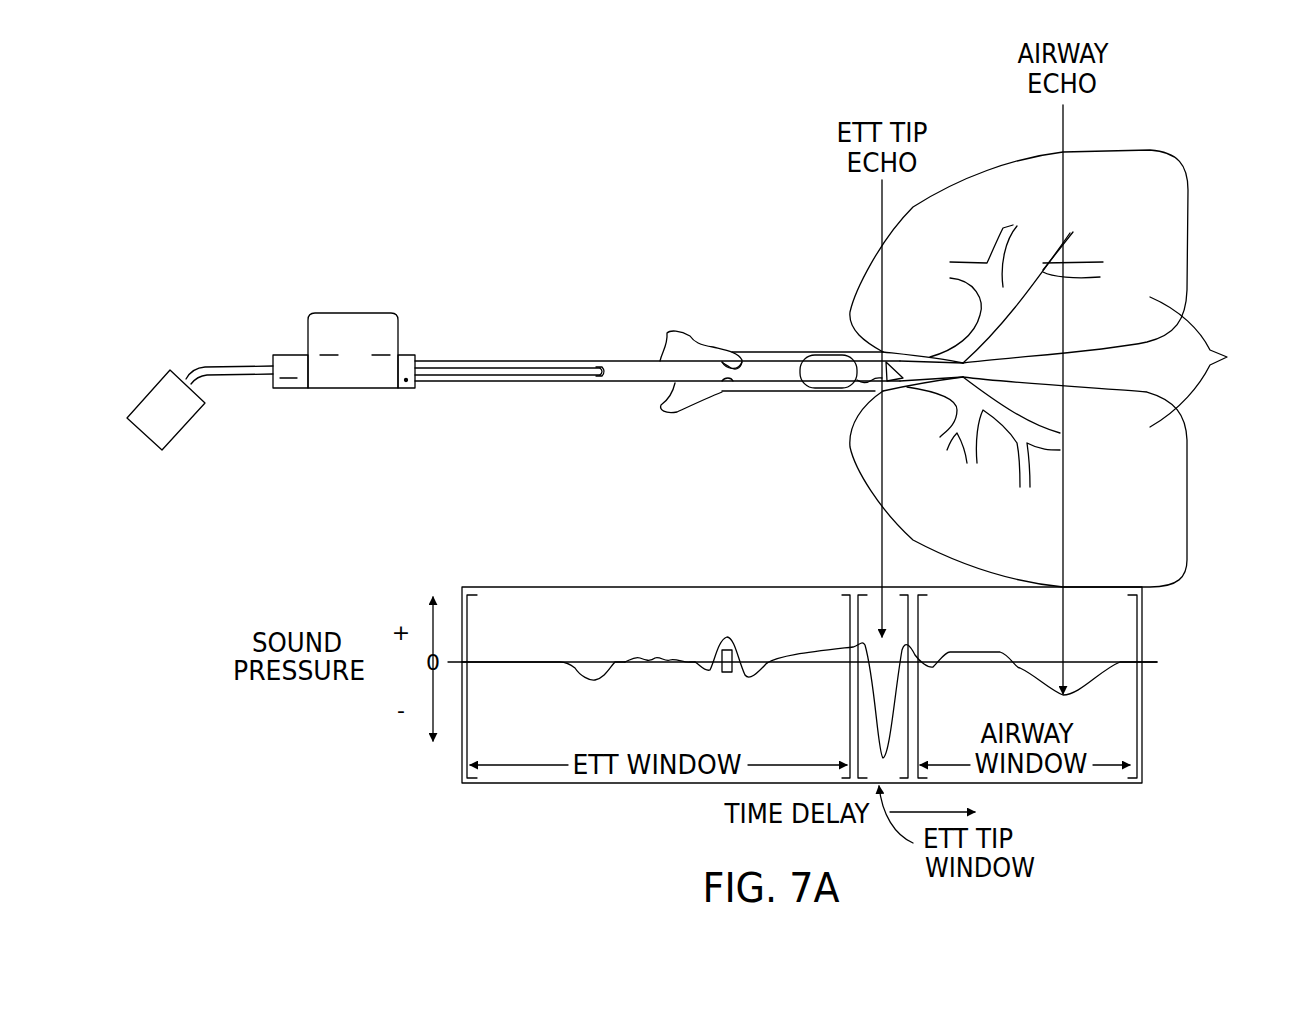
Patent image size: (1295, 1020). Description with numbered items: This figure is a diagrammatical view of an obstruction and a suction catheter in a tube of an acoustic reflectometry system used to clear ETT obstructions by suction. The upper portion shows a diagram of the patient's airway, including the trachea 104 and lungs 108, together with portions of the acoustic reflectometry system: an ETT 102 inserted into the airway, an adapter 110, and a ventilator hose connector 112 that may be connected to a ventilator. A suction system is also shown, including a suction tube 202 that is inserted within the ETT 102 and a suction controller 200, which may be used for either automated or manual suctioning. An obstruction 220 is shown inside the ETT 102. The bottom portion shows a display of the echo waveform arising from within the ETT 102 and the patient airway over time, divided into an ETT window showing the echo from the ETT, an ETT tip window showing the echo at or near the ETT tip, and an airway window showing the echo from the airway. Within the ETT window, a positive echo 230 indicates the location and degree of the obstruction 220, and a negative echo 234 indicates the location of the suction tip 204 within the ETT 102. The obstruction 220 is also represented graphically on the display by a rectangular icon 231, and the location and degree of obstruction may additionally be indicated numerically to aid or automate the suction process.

The ETT 102 is at (638, 361).
The trachea 104 is at (750, 392).
The lungs 108 is at (1064, 368).
The adapter 110 is at (372, 313).
The ventilator hose connector 112 is at (292, 355).
The suction controller 200 is at (183, 428).
The suction tube 202 is at (562, 362).
The suction tip 204 is at (606, 372).
The obstruction 220 is at (745, 362).
The positive echo 230 is at (727, 632).
The rectangular icon 231 is at (727, 677).
The negative echo 234 is at (593, 662).